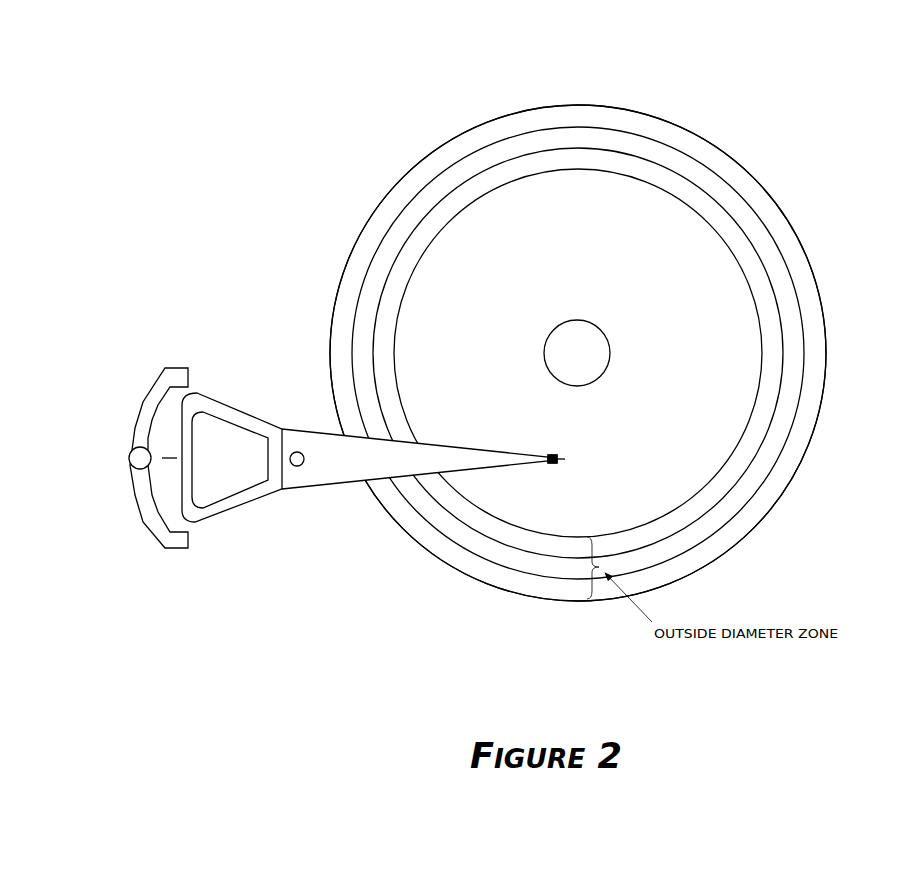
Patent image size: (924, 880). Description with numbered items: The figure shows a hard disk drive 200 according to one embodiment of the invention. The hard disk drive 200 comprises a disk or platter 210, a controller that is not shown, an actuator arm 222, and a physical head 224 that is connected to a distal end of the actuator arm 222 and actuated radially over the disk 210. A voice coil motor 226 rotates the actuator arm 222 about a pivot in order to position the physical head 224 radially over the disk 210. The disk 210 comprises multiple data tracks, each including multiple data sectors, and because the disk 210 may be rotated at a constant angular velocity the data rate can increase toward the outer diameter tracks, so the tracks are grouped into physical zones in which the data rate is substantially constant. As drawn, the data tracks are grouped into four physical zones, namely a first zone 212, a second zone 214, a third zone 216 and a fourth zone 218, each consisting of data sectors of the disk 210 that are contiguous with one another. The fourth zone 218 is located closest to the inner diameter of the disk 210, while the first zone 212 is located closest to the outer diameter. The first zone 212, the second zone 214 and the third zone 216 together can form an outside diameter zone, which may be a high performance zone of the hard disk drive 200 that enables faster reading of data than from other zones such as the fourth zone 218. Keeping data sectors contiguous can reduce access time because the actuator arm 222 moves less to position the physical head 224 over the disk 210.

The hard disk drive 200 is at (157, 96).
The disk 210 is at (355, 165).
The Zone 1 212 is at (796, 271).
The Zone 2 214 is at (753, 234).
The Zone 3 216 is at (692, 205).
The Zone 4 218 is at (586, 243).
The actuator arm 222 is at (307, 490).
The physical head 224 is at (550, 467).
The voice coil motor 226 is at (220, 519).